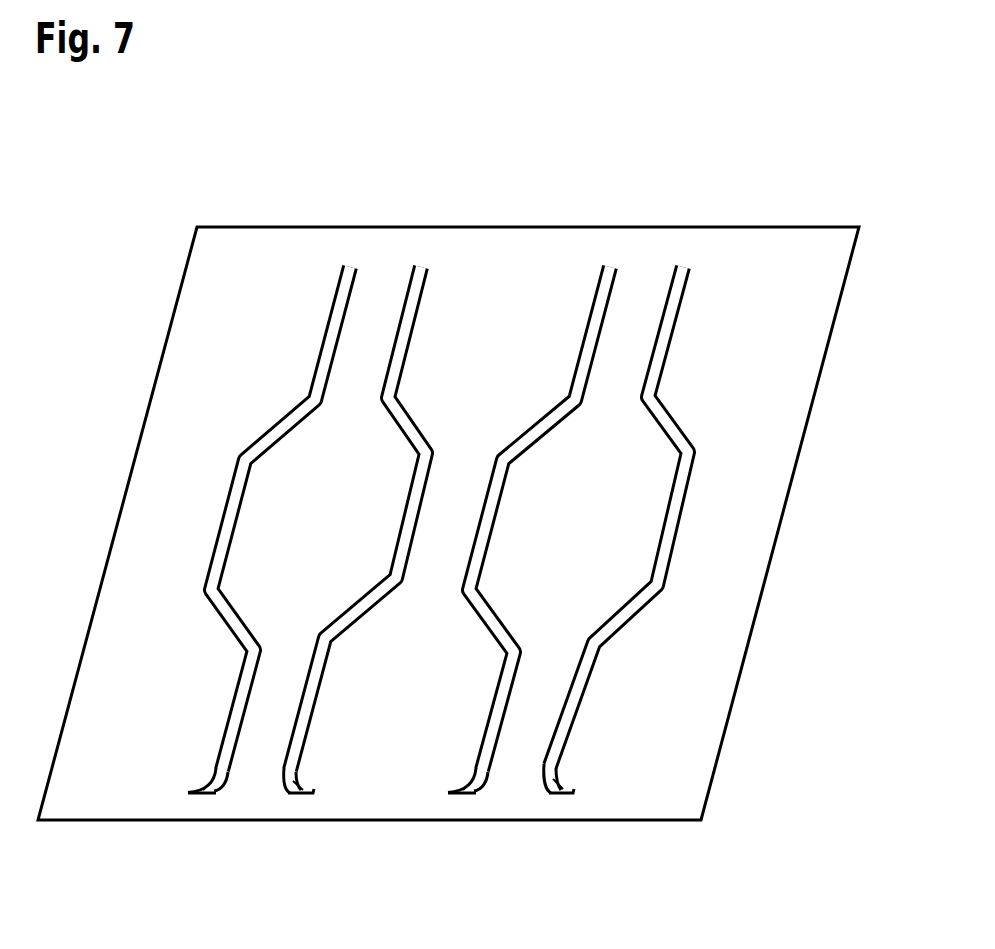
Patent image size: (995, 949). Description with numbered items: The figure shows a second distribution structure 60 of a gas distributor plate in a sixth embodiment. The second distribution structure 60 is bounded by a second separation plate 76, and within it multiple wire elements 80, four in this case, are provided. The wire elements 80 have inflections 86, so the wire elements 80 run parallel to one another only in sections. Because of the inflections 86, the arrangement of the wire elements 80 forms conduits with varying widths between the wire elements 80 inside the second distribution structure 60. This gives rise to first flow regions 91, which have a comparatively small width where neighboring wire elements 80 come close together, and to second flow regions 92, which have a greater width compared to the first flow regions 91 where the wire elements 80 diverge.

The second distribution structure 60 is at (648, 140).
The second separation plate 76 is at (513, 260).
The inflections 86 is at (280, 438).
The wire elements 80 is at (207, 794).
The first flow regions 91 is at (388, 334).
The second flow regions 92 is at (518, 334).